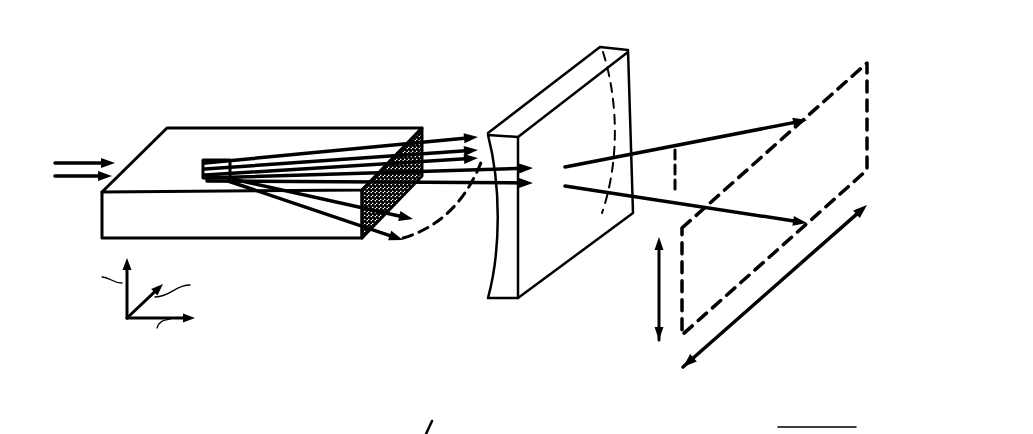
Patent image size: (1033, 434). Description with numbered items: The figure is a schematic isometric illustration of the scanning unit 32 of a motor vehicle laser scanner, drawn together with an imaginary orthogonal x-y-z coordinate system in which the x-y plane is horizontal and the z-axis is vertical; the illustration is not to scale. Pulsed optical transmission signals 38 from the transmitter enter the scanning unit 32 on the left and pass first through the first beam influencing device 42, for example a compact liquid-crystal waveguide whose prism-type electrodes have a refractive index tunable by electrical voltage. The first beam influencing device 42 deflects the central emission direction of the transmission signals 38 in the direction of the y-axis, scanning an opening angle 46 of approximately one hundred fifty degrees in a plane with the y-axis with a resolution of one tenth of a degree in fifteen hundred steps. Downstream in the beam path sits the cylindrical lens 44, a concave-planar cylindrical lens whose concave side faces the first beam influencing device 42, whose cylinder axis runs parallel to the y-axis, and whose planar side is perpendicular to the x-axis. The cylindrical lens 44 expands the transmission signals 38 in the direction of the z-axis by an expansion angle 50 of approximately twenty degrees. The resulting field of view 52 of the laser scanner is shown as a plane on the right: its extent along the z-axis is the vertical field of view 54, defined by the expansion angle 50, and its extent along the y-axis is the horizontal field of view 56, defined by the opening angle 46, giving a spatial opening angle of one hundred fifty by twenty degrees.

The scanning unit 32 is at (159, 59).
The transmission signals 38 is at (70, 163).
The first beam influencing device 42 is at (232, 140).
The cylindrical lens 44 is at (615, 78).
The opening angle 46 is at (440, 212).
The expansion angle 50 is at (677, 187).
The field of view 52 is at (823, 143).
The vertical field of view 54 is at (655, 316).
The horizontal field of view 56 is at (817, 252).